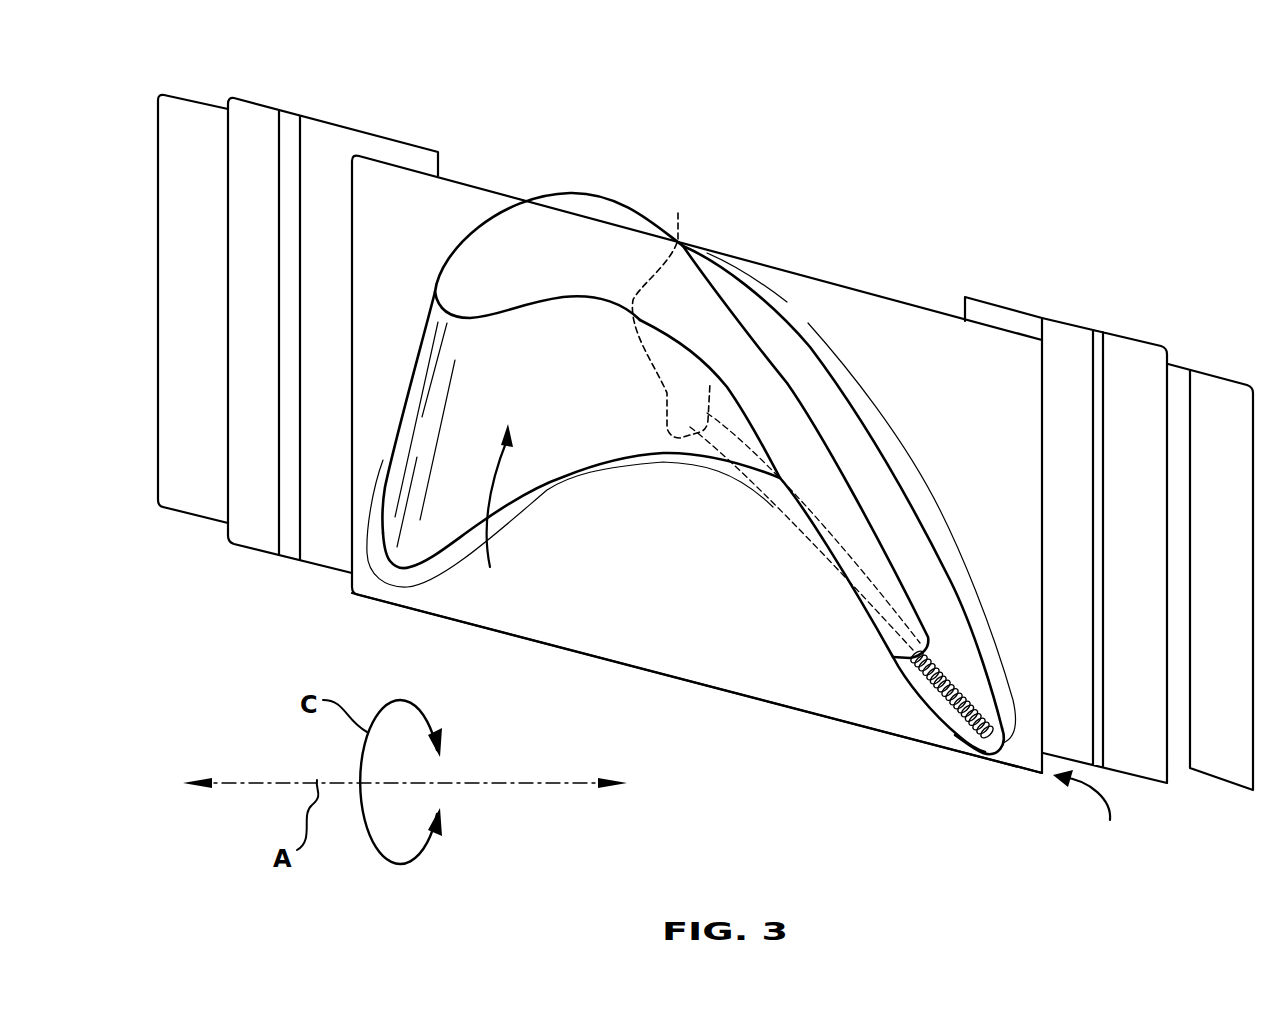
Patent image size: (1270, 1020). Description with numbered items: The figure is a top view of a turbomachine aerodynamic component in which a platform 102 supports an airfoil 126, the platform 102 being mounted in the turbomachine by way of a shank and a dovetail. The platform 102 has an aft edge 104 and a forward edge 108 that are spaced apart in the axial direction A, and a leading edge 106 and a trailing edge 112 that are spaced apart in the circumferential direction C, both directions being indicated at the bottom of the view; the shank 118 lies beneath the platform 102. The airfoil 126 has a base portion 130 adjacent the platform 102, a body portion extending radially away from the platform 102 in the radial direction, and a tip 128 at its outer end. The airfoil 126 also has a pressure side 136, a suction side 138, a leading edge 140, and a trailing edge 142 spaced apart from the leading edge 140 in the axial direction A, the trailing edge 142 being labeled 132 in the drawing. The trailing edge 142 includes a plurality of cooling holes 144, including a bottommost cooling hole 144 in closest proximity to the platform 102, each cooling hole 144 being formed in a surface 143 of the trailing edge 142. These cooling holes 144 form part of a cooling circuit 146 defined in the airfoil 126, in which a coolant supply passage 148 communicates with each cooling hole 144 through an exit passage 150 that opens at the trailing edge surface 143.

The platform 102 is at (984, 358).
The aft edge 104 is at (1042, 490).
The leading edge 106 is at (477, 187).
The forward edge 108 is at (367, 377).
The trailing edge 112 is at (843, 725).
The shank 118 is at (247, 138).
The airfoil 126 is at (494, 511).
The tip 128 is at (600, 258).
The base portion 130 is at (580, 470).
The trailing edge 132 is at (973, 613).
The pressure side 136 is at (603, 430).
The suction side 138 is at (785, 350).
The leading edge 140 is at (407, 423).
The trailing edge 142 is at (1092, 814).
The trailing edge surface 143 is at (983, 753).
The cooling holes 144 is at (977, 747).
The cooling circuit 146 is at (706, 332).
The coolant supply passage 148 is at (671, 312).
The exit passage 150 is at (752, 440).